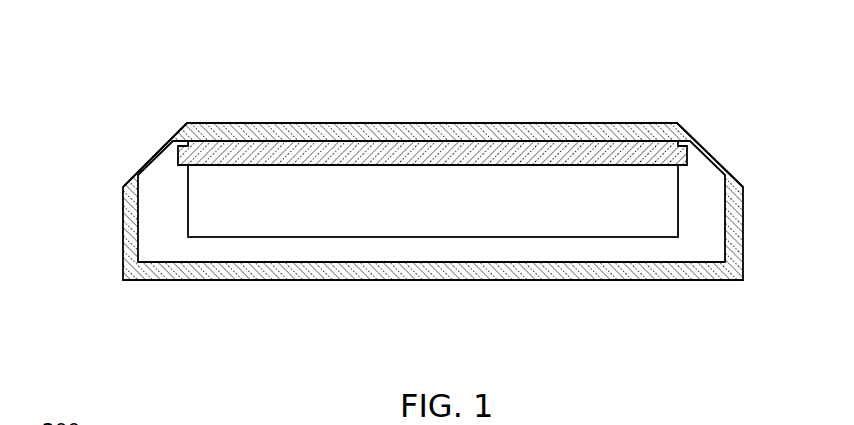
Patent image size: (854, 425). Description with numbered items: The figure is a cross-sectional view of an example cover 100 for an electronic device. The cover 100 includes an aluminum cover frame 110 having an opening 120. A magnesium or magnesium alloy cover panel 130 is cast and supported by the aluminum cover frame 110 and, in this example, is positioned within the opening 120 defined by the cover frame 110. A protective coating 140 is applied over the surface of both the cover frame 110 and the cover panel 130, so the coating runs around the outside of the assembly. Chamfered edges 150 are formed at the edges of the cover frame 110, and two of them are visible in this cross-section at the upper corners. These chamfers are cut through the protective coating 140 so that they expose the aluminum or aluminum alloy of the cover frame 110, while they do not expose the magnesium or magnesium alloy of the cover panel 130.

The cover 100 is at (150, 38).
The cover frame 110 is at (443, 250).
The opening 120 is at (410, 196).
The cover panel 130 is at (613, 152).
The protective coating 140 is at (288, 132).
The chamfered edges 150 is at (156, 154).